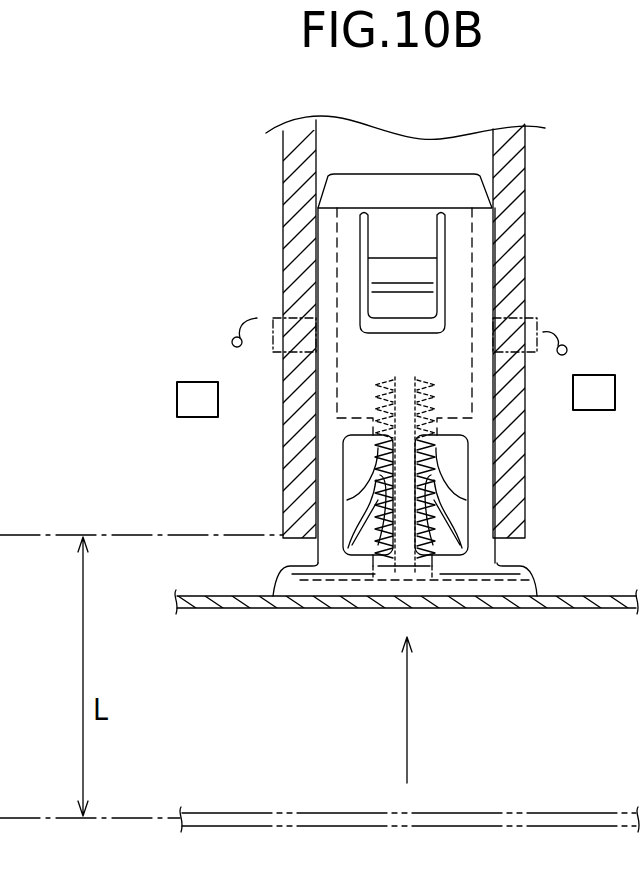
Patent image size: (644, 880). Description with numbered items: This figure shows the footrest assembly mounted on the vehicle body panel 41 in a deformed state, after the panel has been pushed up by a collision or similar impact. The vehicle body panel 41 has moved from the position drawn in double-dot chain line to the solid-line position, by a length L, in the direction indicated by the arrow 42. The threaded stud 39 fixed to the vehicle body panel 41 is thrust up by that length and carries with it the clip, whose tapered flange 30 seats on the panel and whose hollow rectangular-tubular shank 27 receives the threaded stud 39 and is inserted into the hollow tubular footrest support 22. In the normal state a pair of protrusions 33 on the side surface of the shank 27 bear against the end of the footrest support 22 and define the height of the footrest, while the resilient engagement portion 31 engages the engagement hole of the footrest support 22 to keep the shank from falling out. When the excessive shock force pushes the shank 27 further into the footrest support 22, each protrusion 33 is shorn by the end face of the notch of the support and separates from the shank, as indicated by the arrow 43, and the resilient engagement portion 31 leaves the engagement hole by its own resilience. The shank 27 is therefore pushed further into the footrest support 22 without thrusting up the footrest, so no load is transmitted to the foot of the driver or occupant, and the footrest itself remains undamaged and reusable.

The footrest support 22 is at (520, 220).
The shank 27 is at (330, 270).
The resilient engagement portion 31 is at (390, 270).
The protrusion 33 is at (198, 405).
The threaded stud 39 is at (430, 492).
The flange 30 is at (530, 577).
The vehicle body panel 41 is at (220, 606).
The arrow 42 is at (405, 717).
The arrow 43 is at (207, 375).